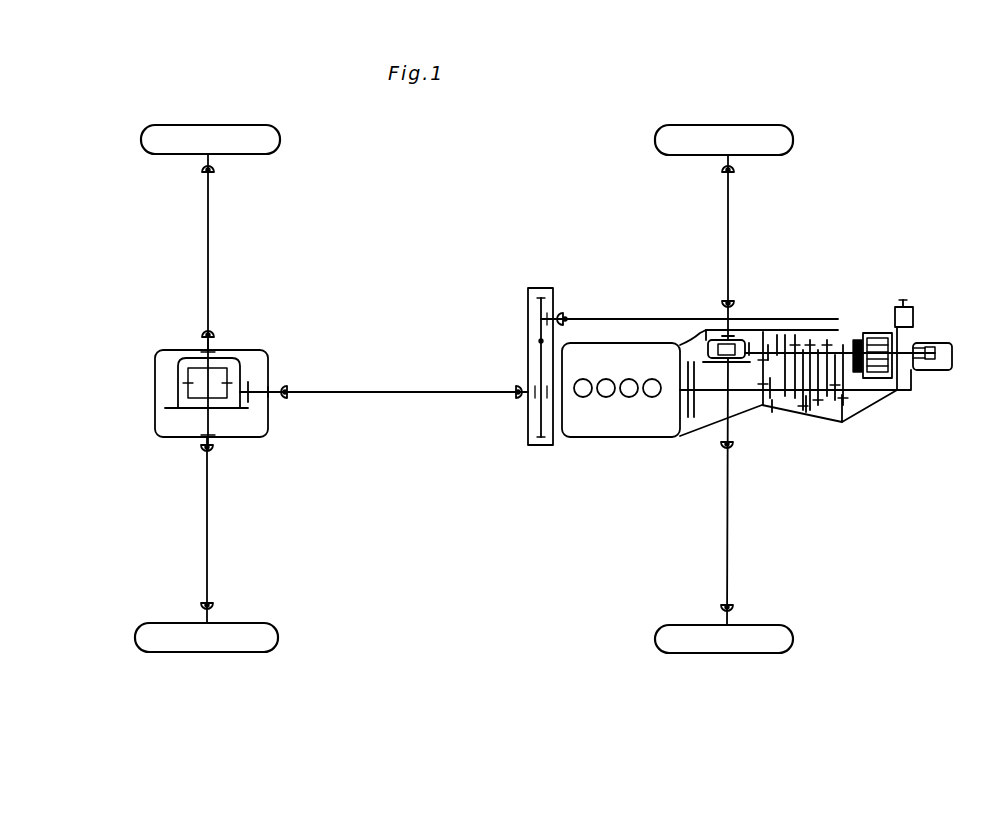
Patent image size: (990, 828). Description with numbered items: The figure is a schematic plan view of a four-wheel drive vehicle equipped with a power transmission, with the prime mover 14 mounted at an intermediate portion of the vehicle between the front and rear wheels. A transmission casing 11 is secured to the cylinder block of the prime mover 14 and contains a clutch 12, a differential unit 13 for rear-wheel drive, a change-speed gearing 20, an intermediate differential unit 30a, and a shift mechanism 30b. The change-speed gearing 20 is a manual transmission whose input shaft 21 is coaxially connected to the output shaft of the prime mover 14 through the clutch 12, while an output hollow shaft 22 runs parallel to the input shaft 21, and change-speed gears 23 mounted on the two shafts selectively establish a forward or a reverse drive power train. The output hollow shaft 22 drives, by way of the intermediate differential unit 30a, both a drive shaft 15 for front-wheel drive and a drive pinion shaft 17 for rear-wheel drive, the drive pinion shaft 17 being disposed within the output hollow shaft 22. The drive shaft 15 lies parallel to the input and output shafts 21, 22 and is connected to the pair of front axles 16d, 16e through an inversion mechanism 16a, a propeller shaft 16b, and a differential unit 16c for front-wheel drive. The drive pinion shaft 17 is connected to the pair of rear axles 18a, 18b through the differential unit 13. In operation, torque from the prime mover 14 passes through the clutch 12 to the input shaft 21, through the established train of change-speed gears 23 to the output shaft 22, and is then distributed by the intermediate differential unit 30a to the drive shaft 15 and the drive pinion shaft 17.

The transmission casing 11 is at (712, 436).
The clutch 12 is at (673, 438).
The differential unit for rear-wheel drive 13 is at (708, 338).
The prime mover 14 is at (607, 430).
The drive shaft 15 is at (617, 320).
The inversion mechanism 16a is at (528, 318).
The propeller shaft 16b is at (402, 392).
The differential unit for front-wheel drive 16c is at (264, 348).
The front axle 16d is at (207, 563).
The front axle 16e is at (208, 228).
The drive pinion shaft 17 is at (822, 330).
The rear axle 18a is at (727, 510).
The rear axle 18b is at (728, 200).
The change-speed gearing 20 is at (805, 410).
The input shaft 21 is at (770, 420).
The output hollow shaft 22 is at (788, 330).
The change-speed gears 23 is at (846, 408).
The intermediate differential unit 30a is at (876, 332).
The shift mechanism 30b is at (935, 373).